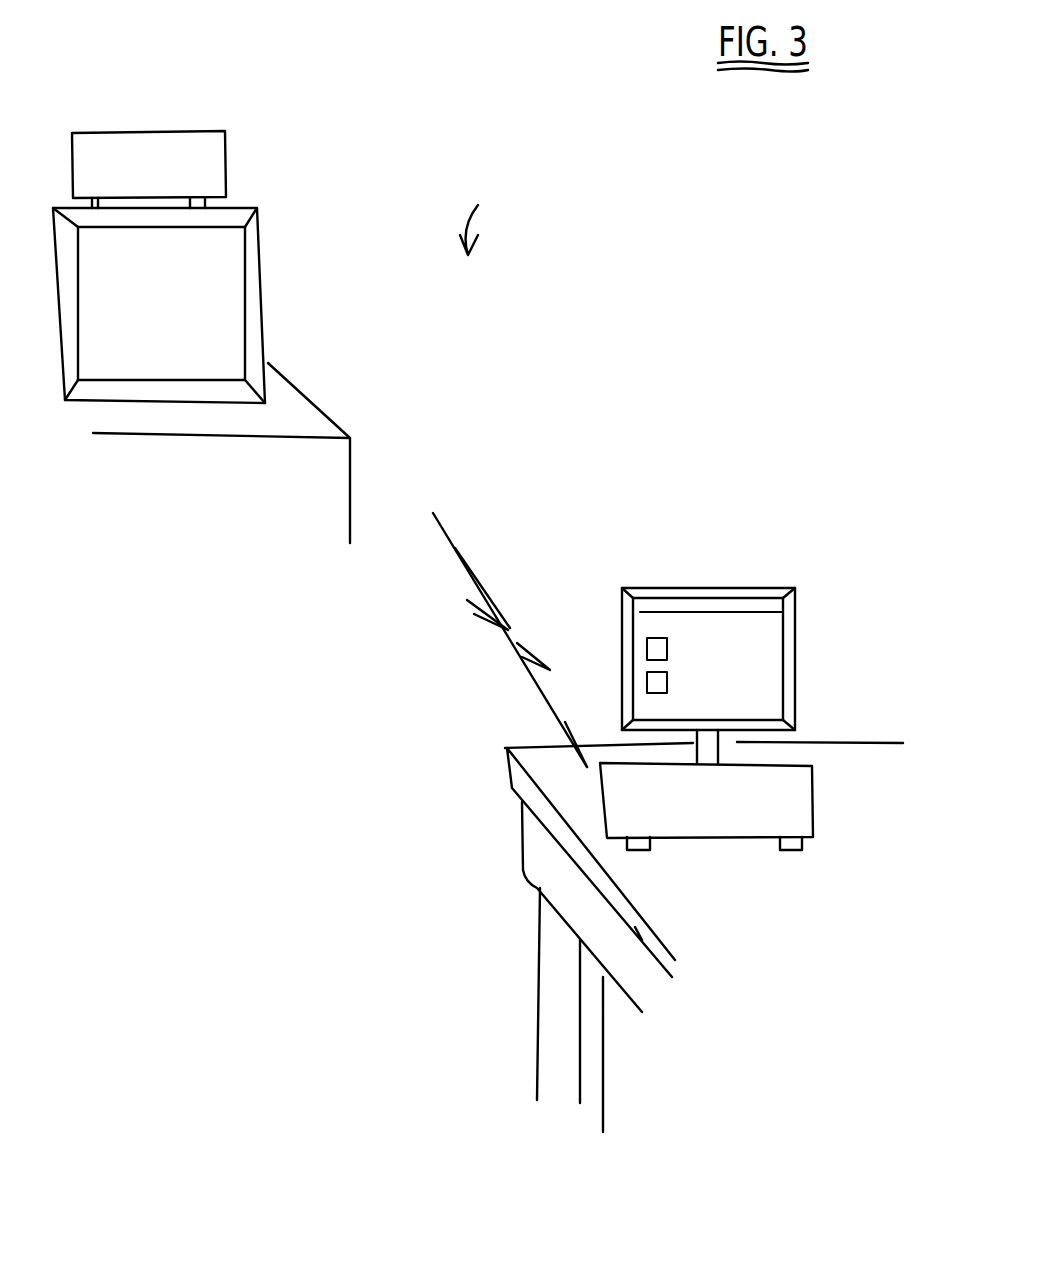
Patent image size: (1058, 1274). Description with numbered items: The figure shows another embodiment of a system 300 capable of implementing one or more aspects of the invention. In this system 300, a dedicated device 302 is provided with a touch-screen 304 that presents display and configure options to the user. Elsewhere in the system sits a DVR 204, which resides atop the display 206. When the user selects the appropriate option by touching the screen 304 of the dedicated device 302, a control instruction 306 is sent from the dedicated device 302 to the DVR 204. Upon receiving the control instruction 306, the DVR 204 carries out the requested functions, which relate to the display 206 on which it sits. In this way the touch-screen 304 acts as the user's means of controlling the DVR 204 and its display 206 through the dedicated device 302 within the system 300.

The DVR 204 is at (225, 141).
The display 206 is at (263, 283).
The system 300 is at (495, 200).
The dedicated device 302 is at (713, 583).
The touch-screen 304 is at (770, 637).
The control instruction 306 is at (485, 563).